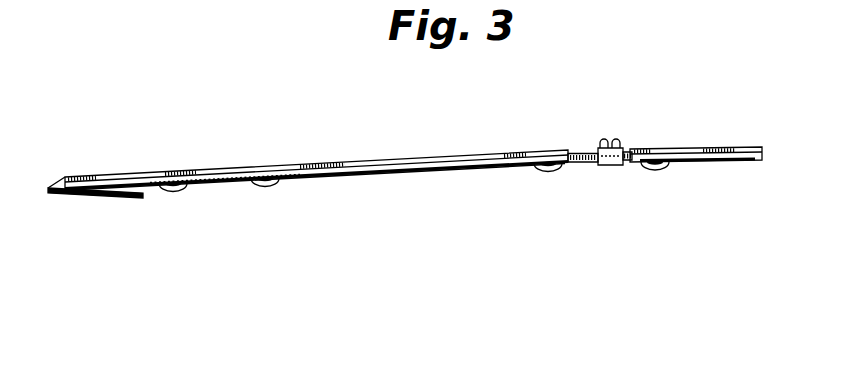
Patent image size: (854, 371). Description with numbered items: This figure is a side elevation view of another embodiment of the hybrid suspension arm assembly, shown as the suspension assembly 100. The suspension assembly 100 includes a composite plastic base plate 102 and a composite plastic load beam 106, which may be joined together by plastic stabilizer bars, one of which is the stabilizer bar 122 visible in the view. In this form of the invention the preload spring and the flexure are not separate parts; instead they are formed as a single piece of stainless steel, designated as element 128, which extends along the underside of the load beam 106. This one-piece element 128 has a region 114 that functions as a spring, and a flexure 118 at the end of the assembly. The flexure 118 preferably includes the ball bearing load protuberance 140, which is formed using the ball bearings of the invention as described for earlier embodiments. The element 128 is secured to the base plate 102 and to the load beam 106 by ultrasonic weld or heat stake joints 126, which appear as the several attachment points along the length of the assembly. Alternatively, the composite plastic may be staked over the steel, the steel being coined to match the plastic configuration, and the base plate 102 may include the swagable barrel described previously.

The suspension assembly 100 is at (272, 90).
The composite plastic base plate 102 is at (690, 134).
The composite plastic load beam 106 is at (355, 150).
The spring region 114 is at (582, 165).
The flexure 118 is at (45, 198).
The plastic stabilizer bar 122 is at (583, 152).
The ultrasonic weld or heat stake joints 126 is at (252, 187).
The one-piece preload spring and flexure element 128 is at (383, 185).
The ball bearing load protuberance 140 is at (108, 194).